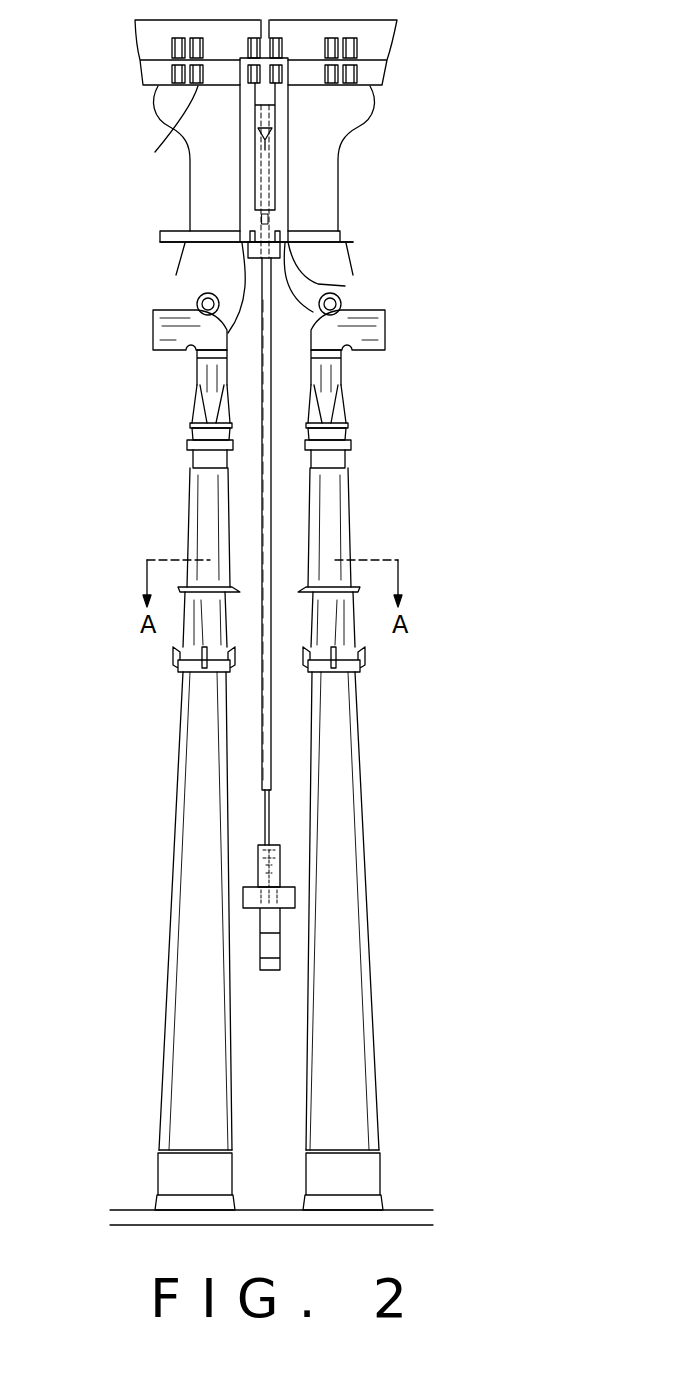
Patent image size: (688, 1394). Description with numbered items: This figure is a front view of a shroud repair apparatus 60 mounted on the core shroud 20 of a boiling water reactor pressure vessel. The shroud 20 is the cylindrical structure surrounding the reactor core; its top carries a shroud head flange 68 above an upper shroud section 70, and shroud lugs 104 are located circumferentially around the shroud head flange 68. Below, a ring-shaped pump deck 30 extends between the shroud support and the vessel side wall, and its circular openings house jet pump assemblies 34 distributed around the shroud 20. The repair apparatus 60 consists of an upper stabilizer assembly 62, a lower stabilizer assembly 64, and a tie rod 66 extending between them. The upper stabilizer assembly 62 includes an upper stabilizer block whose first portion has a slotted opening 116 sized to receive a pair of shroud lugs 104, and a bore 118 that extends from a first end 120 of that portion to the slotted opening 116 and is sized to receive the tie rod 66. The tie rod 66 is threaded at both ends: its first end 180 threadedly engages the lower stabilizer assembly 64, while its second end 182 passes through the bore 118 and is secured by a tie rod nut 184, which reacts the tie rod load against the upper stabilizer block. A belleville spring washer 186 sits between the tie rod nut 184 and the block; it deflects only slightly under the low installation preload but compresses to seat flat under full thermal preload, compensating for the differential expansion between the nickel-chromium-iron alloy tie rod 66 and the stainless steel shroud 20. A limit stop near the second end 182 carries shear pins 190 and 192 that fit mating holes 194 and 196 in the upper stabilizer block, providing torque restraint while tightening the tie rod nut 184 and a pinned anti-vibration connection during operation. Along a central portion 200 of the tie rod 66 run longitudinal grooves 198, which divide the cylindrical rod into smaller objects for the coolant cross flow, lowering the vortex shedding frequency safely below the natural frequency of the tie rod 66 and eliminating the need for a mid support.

The core shroud 20 is at (202, 260).
The pump deck 30 is at (412, 1216).
The jet pump assembly 34 is at (344, 522).
The shroud repair apparatus 60 is at (322, 263).
The upper stabilizer assembly 62 is at (299, 175).
The lower stabilizer assembly 64 is at (282, 877).
The tie rod 66 is at (273, 778).
The shroud head flange 68 is at (157, 67).
The upper shroud section 70 is at (200, 147).
The shroud lug 104 is at (360, 72).
The slotted opening 116 is at (288, 95).
The bore 118 is at (266, 221).
The first end 120 is at (345, 286).
The first end 180 is at (275, 837).
The second end 182 is at (241, 262).
The tie rod nut 184 is at (262, 94).
The belleville spring washer 186 is at (262, 128).
The shear pin 190 is at (189, 349).
The shear pin 192 is at (385, 316).
The mating hole 194 is at (160, 231).
The mating hole 196 is at (340, 231).
The longitudinal groove 198 is at (265, 528).
The central portion 200 is at (282, 514).